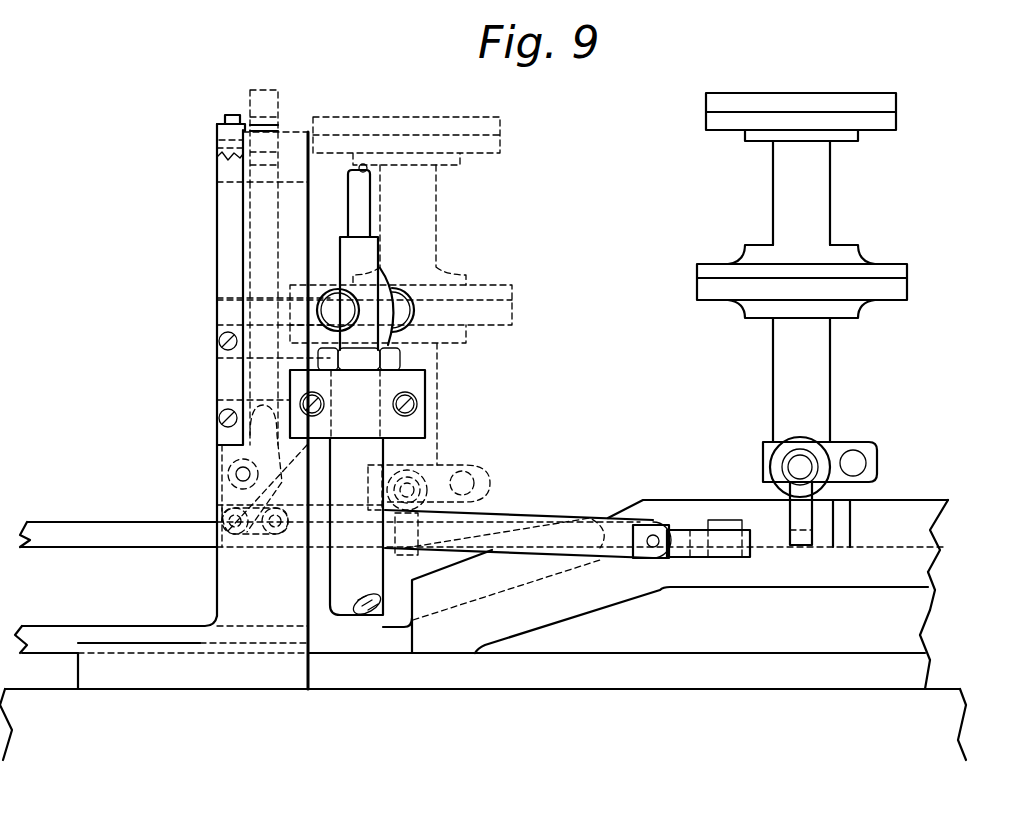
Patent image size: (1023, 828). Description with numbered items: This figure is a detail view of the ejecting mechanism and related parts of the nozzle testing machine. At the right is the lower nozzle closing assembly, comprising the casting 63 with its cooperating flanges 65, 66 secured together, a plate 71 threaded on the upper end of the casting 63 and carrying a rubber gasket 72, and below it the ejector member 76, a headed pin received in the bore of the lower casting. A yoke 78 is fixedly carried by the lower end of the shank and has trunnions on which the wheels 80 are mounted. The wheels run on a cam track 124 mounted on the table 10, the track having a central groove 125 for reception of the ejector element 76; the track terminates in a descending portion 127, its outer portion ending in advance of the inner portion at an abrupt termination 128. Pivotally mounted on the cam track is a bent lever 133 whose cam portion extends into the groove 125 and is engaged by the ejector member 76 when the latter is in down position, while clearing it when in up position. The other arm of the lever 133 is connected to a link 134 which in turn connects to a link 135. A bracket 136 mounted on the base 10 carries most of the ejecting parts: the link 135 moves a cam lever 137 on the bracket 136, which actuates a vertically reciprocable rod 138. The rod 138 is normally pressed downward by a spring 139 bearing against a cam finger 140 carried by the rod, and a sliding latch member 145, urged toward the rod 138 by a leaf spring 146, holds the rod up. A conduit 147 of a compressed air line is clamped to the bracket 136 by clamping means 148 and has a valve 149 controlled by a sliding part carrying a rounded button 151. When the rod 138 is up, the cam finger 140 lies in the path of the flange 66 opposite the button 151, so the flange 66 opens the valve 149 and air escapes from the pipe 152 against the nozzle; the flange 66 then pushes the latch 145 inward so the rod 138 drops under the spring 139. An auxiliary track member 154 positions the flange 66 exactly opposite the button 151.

The table 10 is at (483, 688).
The casting 63 is at (820, 210).
The flange 65 is at (900, 268).
The flange 66 is at (900, 292).
The plate 71 is at (500, 150).
The rubber gasket 72 is at (897, 102).
The ejector member 76 is at (420, 538).
The yoke 78 is at (476, 472).
The wheel 80 is at (422, 470).
The cam track 124 is at (925, 572).
The central groove 125 is at (952, 530).
The descending portion 127 is at (622, 515).
The abrupt termination 128 is at (860, 538).
The bent lever 133 is at (752, 550).
The link 134 is at (678, 558).
The link 135 is at (495, 512).
The bracket 136 is at (239, 530).
The cam lever 137 is at (232, 496).
The vertically reciprocable rod 138 is at (243, 272).
The spring 139 is at (278, 118).
The cam finger 140 is at (400, 355).
The sliding latch member 145 is at (217, 130).
The leaf spring 146 is at (230, 222).
The conduit 147 is at (371, 532).
The clamping means 148 is at (357, 404).
The valve 149 is at (358, 250).
The button 151 is at (400, 290).
The pipe 152 is at (358, 205).
The auxiliary track member 154 is at (160, 547).